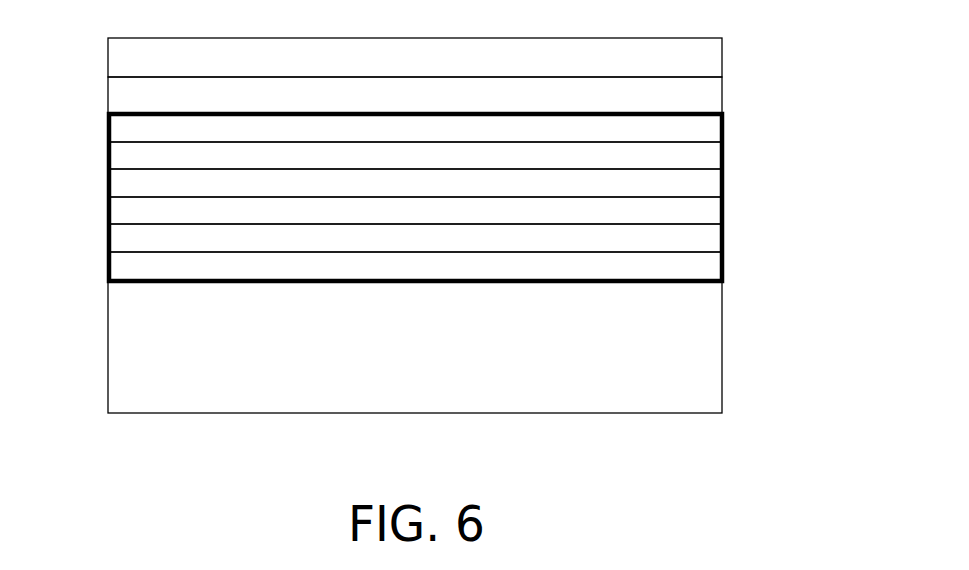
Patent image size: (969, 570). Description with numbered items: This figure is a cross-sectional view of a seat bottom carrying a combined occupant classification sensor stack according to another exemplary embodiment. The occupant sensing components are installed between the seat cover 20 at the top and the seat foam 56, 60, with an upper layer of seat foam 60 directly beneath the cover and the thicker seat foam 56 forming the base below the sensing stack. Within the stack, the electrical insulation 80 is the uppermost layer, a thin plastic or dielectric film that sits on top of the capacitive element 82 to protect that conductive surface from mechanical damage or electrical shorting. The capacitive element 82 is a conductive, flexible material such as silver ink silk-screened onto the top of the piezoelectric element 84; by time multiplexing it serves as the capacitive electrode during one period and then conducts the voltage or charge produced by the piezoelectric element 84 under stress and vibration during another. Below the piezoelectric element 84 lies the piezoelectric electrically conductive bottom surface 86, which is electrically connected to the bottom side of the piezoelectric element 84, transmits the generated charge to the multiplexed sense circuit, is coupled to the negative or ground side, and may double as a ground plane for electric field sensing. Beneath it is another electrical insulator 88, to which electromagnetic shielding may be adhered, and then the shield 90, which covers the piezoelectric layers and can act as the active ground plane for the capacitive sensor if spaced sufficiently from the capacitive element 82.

The seat cover 20 is at (692, 54).
The seat foam 60 is at (683, 91).
The electrical insulation 80 is at (692, 128).
The capacitive element 82 is at (693, 157).
The piezoelectric element 84 is at (693, 180).
The piezoelectric electrically conductive bottom surface 86 is at (693, 208).
The electrical insulator 88 is at (693, 241).
The shield 90 is at (693, 263).
The seat foam 56 is at (685, 334).